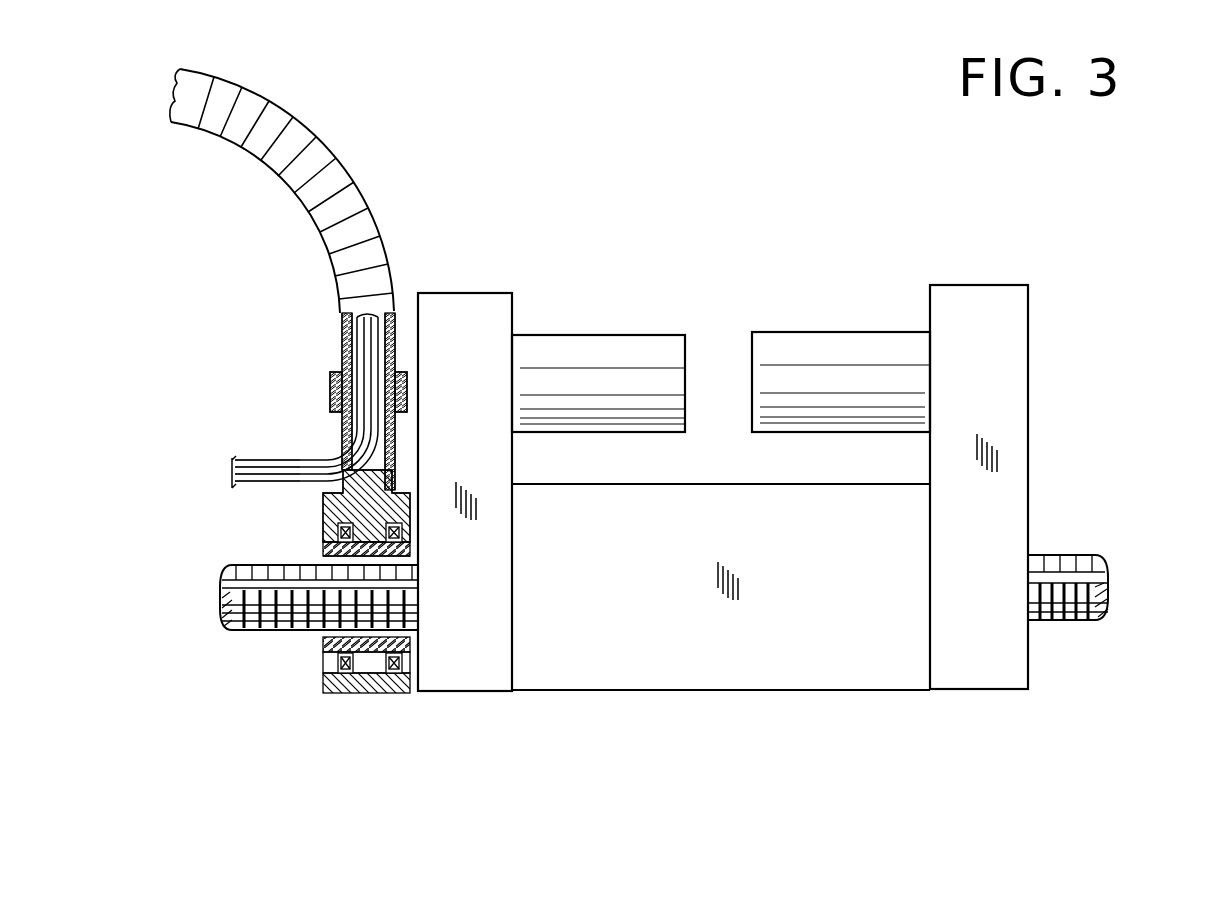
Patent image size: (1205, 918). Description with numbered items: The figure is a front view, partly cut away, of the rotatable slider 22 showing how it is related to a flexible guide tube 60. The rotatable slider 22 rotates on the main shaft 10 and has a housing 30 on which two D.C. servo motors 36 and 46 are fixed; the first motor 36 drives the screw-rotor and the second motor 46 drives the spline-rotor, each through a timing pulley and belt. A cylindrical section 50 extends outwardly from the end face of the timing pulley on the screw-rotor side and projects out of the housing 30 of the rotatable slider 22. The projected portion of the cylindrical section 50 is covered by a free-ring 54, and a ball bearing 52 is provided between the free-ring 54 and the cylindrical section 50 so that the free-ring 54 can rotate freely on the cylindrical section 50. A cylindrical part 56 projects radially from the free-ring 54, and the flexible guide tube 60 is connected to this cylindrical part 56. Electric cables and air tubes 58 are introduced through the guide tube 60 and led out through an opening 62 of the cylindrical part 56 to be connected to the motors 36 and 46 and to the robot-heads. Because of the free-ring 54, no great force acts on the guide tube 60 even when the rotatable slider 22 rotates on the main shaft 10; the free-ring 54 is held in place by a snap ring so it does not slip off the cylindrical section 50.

The main shaft 10 is at (1106, 563).
The rotatable slider 22 is at (801, 702).
The housing 30 is at (610, 690).
The D.C. servo motor 36 is at (620, 352).
The D.C. servo motor 46 is at (795, 345).
The cylindrical section 50 is at (326, 648).
The ball bearing 52 is at (336, 695).
The free-ring 54 is at (332, 508).
The cylindrical part 56 is at (400, 444).
The electric cables and air tubes 58 is at (260, 463).
The flexible guide tube 60 is at (316, 156).
The opening 62 is at (340, 437).